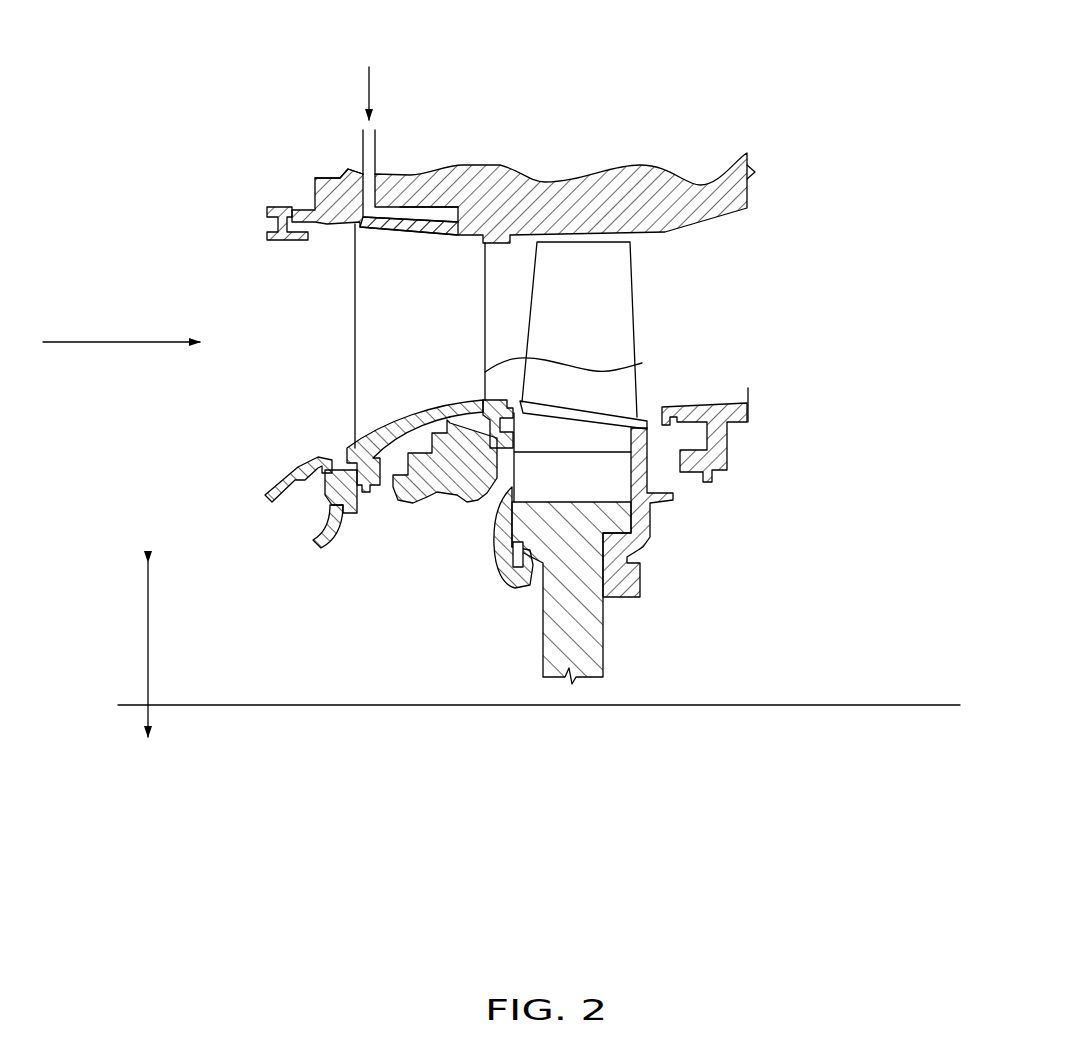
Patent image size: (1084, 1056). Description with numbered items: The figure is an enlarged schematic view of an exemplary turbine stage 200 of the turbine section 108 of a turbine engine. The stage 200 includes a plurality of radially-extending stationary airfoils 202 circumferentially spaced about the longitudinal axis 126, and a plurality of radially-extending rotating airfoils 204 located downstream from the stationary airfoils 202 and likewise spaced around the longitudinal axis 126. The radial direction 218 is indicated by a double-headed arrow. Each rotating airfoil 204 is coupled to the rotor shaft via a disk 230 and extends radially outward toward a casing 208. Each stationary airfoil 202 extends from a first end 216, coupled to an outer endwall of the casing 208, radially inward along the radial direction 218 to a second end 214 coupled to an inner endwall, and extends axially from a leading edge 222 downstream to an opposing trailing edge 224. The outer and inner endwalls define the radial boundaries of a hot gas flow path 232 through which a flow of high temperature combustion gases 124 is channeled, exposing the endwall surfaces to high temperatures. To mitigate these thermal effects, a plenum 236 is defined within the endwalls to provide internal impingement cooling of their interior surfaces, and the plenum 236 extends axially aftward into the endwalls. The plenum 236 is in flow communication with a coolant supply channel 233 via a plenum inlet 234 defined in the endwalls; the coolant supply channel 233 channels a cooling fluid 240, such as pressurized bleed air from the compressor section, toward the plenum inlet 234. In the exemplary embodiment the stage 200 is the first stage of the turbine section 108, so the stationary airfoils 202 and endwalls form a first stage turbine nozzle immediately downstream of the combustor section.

The turbine section 108 is at (668, 81).
The flow of high temperature combustion gases 124 is at (117, 344).
The longitudinal axis 126 is at (818, 704).
The turbine stage 200 is at (552, 97).
The stationary airfoil 202 is at (354, 387).
The rotating airfoil 204 is at (640, 300).
The casing 208 is at (350, 168).
The second end 214 is at (347, 441).
The first end 216 is at (349, 230).
The radial direction 218 is at (148, 607).
The leading edge 222 is at (354, 309).
The trailing edge 224 is at (640, 364).
The disk 230 is at (603, 643).
The hot gas flow path 232 is at (667, 242).
The coolant supply channel 233 is at (362, 148).
The plenum inlet 234 is at (377, 148).
The plenum 236 is at (437, 206).
The cooling fluid 240 is at (369, 80).